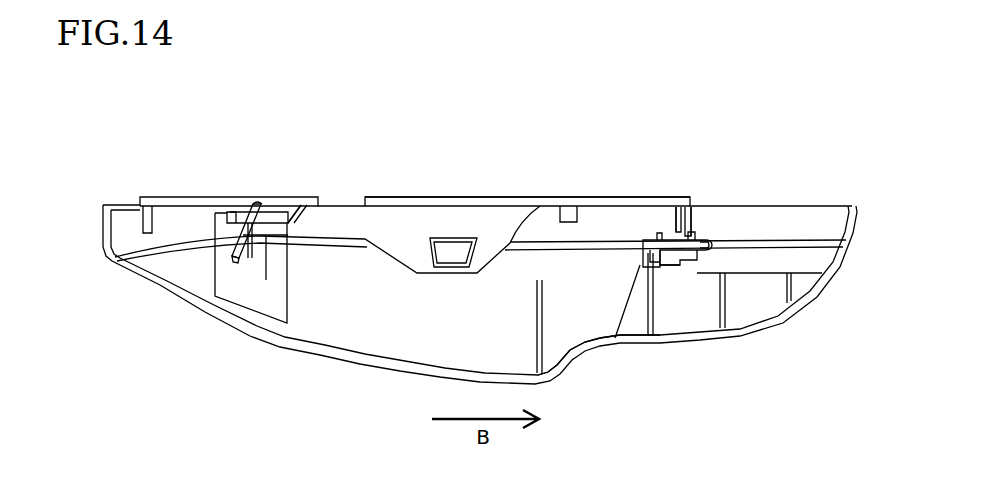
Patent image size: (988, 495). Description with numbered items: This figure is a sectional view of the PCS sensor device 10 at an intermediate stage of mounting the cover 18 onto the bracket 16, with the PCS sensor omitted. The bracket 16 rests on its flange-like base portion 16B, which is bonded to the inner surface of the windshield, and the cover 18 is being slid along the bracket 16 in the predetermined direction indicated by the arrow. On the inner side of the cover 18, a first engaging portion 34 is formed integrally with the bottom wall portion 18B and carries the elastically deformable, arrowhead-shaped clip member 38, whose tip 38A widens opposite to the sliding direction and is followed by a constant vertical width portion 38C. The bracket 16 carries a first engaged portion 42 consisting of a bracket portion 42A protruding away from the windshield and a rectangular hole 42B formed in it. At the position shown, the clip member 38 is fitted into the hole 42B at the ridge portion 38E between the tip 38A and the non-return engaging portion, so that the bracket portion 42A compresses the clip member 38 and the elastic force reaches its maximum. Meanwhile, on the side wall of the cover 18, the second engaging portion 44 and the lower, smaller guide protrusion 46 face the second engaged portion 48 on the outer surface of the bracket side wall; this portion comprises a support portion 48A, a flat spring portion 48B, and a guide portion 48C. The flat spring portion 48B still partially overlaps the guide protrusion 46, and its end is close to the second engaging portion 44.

The PCS sensor device 10 is at (370, 148).
The bracket 16 is at (553, 197).
The base portion 16B is at (465, 197).
The cover 18 is at (320, 356).
The bottom wall portion 18B is at (570, 358).
The first engaging portion 34 is at (672, 284).
The clip member 38 is at (660, 232).
The tip 38A is at (708, 238).
The constant vertical width portion 38C is at (665, 266).
The ridge portion 38E is at (697, 226).
The first engaged portion 42 is at (698, 266).
The bracket portion 42A is at (689, 230).
The rectangular hole 42B is at (705, 258).
The second engaging portion 44 is at (236, 211).
The guide protrusion 46 is at (253, 243).
The second engaged portion 48 is at (229, 264).
The support portion 48A is at (301, 205).
The flat spring portion 48B is at (270, 232).
The guide portion 48C is at (237, 232).